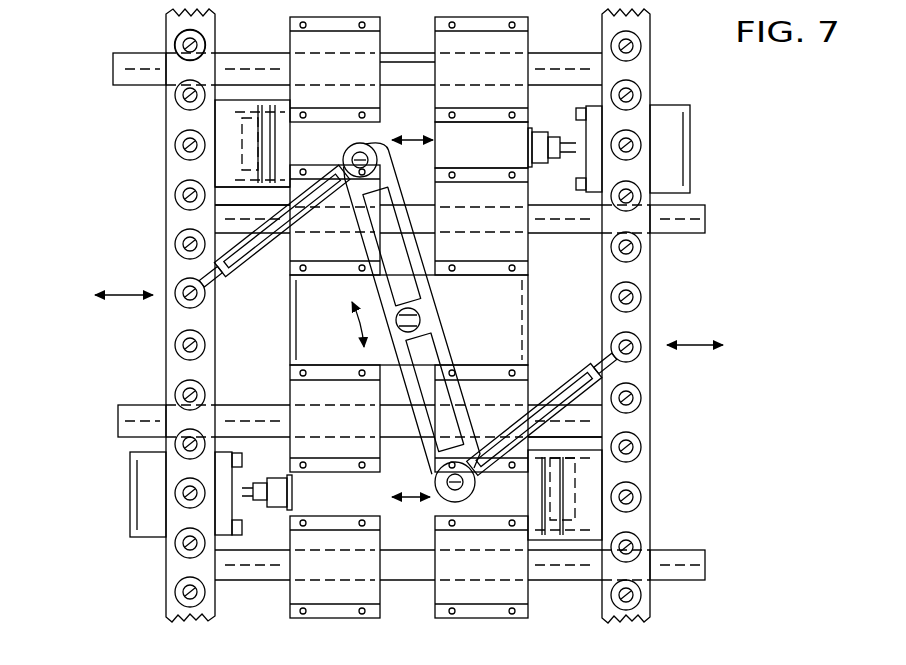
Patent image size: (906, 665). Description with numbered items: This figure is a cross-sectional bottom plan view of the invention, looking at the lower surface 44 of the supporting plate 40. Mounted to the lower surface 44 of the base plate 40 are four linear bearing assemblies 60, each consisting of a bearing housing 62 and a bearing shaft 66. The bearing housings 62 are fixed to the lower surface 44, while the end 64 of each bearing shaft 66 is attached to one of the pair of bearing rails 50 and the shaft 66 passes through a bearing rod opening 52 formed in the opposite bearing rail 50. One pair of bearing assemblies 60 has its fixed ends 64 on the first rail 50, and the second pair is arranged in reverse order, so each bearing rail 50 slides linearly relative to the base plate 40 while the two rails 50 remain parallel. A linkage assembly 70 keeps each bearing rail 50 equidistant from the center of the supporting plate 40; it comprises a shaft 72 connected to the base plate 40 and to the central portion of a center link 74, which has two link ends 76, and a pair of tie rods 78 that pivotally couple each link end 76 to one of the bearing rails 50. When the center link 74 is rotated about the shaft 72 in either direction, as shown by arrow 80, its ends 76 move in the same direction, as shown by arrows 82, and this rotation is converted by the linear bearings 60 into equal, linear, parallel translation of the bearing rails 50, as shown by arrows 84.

The supporting plate 40 is at (495, 148).
The lower surface 44 is at (497, 352).
The bearing rail 50 is at (167, 172).
The bearing rod opening 52 is at (164, 87).
The linear bearing assembly 60 is at (106, 70).
The bearing housing 62 is at (505, 48).
The end of bearing shaft 64 is at (166, 567).
The bearing shaft 66 is at (158, 52).
The linkage assembly 70 is at (450, 298).
The shaft 72 is at (398, 316).
The center link 74 is at (430, 318).
The link end 76 is at (345, 150).
The tie rod 78 is at (182, 232).
The arrow 80 is at (352, 333).
The arrows 82 is at (410, 133).
The arrows 84 is at (130, 298).